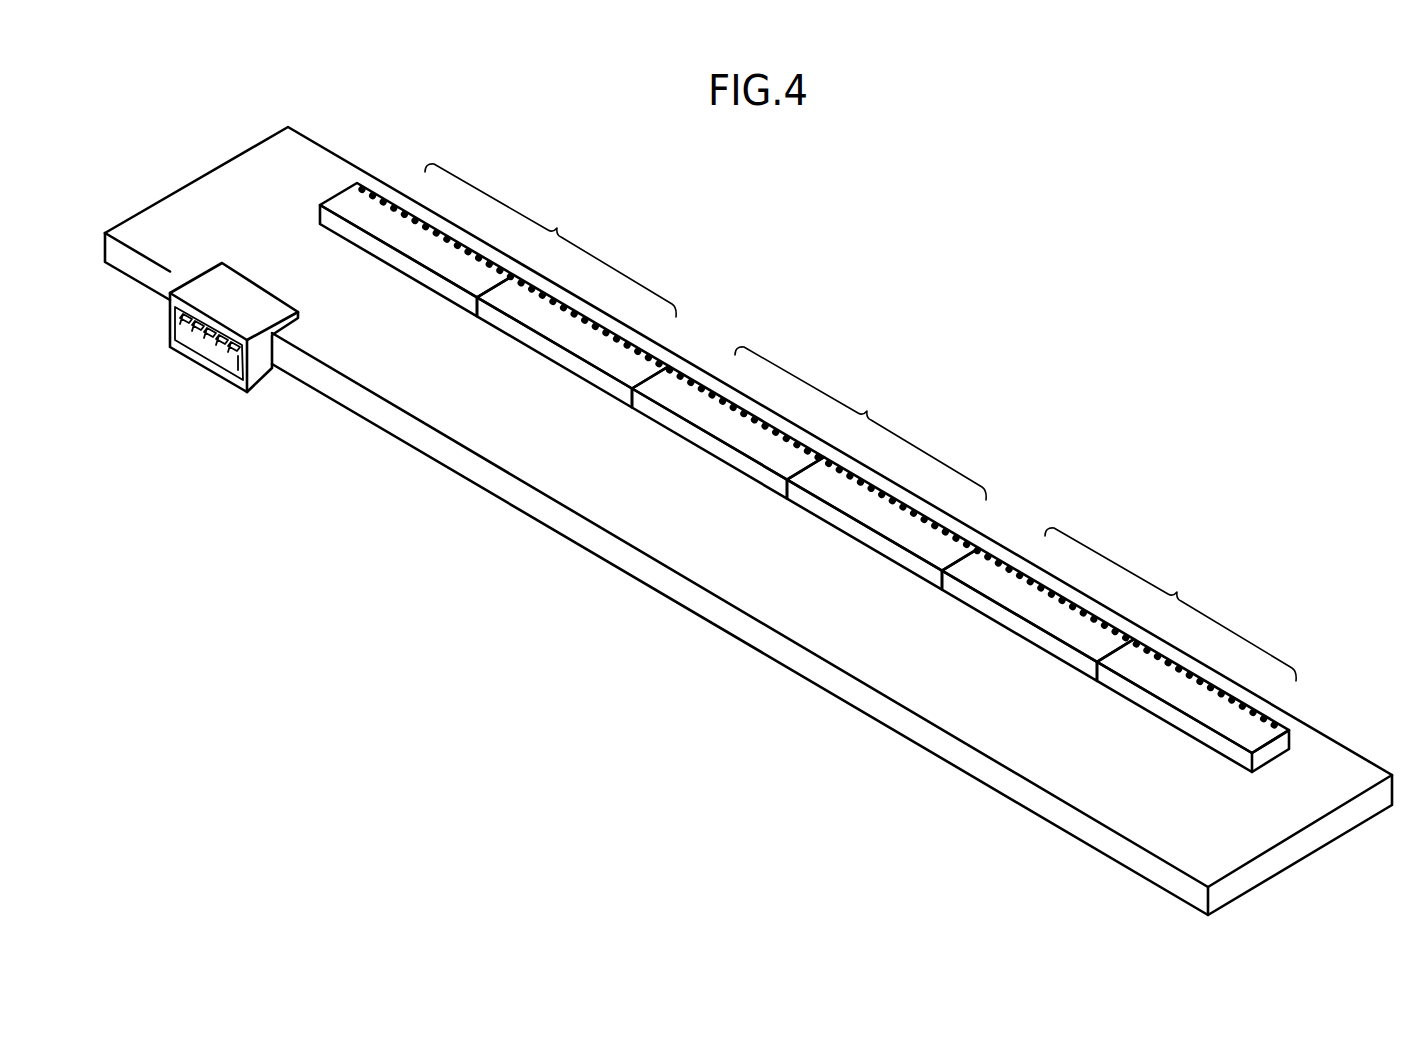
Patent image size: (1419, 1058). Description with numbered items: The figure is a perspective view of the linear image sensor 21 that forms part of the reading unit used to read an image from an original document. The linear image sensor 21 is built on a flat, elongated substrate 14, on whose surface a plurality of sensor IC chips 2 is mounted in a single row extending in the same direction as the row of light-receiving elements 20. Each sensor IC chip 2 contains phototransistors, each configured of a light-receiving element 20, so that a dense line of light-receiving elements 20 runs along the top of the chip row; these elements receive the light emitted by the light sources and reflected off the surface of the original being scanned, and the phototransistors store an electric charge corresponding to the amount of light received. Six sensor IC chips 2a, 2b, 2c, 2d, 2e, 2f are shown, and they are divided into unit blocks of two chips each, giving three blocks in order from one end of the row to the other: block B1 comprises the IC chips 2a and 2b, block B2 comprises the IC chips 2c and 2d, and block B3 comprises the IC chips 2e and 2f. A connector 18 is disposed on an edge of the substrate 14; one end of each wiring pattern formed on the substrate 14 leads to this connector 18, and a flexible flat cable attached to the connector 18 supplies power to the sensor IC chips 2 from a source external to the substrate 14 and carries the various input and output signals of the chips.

The sensor IC chip 2 is at (781, 488).
The sensor IC chip 2a is at (428, 278).
The sensor IC chip 2b is at (540, 349).
The sensor IC chip 2c is at (738, 458).
The sensor IC chip 2d is at (873, 542).
The sensor IC chip 2e is at (1048, 641).
The sensor IC chip 2f is at (1180, 723).
The substrate 14 is at (745, 578).
The connector 18 is at (227, 297).
The light-receiving element 20 is at (380, 200).
The linear image sensor 21 is at (998, 307).
The block B1 is at (550, 240).
The block B2 is at (860, 423).
The block B3 is at (1170, 604).